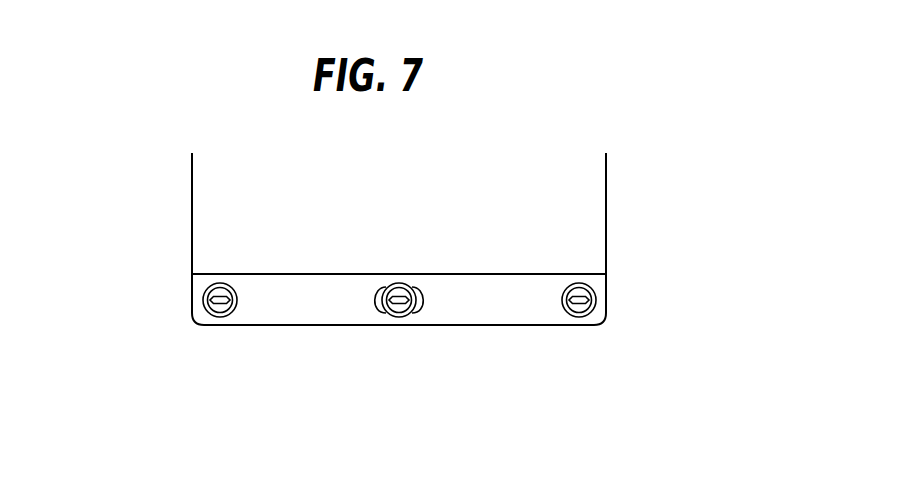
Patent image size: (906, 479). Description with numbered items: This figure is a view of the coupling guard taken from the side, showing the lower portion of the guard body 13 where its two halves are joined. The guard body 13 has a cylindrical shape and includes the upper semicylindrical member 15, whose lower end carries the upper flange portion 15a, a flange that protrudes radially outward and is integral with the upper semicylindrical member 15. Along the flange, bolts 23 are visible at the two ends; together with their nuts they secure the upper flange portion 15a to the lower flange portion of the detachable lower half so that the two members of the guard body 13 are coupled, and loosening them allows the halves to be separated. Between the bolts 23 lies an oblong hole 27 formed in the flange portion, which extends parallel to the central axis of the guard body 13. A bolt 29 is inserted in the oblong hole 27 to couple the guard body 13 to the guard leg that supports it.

The guard body 13 is at (191, 185).
The upper semicylindrical member 15 is at (606, 195).
The upper flange portion 15a is at (549, 326).
The bolt 23 is at (217, 283).
The oblong hole 27 is at (386, 286).
The bolt 29 is at (399, 313).